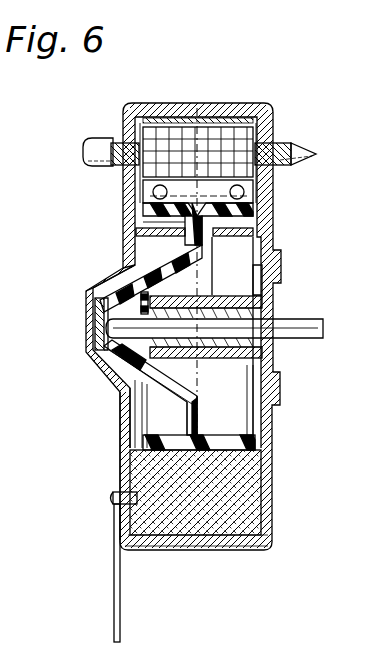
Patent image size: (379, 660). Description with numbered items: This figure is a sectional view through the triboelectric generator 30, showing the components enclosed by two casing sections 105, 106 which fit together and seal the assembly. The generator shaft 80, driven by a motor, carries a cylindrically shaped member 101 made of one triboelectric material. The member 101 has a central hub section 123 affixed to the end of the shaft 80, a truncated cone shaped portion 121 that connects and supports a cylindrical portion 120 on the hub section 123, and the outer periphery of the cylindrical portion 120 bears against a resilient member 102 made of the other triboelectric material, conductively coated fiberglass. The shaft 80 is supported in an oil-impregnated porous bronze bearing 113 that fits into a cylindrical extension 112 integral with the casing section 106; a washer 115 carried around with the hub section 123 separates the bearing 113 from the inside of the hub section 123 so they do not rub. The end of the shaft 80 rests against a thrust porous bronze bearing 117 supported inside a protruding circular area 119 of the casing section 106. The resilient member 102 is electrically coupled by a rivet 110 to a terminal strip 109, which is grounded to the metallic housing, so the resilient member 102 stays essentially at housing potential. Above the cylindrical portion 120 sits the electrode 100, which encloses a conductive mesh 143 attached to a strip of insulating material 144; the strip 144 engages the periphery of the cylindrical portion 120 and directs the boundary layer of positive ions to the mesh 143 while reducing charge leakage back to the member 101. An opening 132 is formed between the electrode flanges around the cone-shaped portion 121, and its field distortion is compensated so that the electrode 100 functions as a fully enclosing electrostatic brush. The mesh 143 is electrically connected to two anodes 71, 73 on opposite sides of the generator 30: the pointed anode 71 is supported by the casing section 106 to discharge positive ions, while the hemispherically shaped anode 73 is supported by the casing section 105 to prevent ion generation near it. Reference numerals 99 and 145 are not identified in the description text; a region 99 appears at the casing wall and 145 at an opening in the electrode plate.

The triboelectric generator 30 is at (92, 208).
The anode 71 is at (292, 147).
The anode 73 is at (98, 150).
The generator shaft 80 is at (300, 327).
The housing shoulder 99 is at (281, 268).
The electrode 100 is at (252, 108).
The cylindrically shaped member 101 is at (166, 437).
The resilient member 102 is at (215, 520).
The casing section 105 is at (273, 516).
The casing section 106 is at (119, 400).
The terminal strip 109 is at (114, 585).
The rivet 110 is at (112, 500).
The cylindrical extension 112 is at (200, 298).
The porous bronze bearing 113 is at (173, 307).
The washer 115 is at (158, 354).
The thrust porous bronze bearing 117 is at (96, 330).
The protruding circular area 119 is at (118, 282).
The cylindrical portion 120 is at (214, 440).
The truncated cone shaped portion 121 is at (196, 390).
The central hub section 123 is at (97, 304).
The opening 132 is at (211, 241).
The mesh 143 is at (224, 144).
The strip of insulating material 144 is at (250, 200).
The opening 145 is at (241, 190).